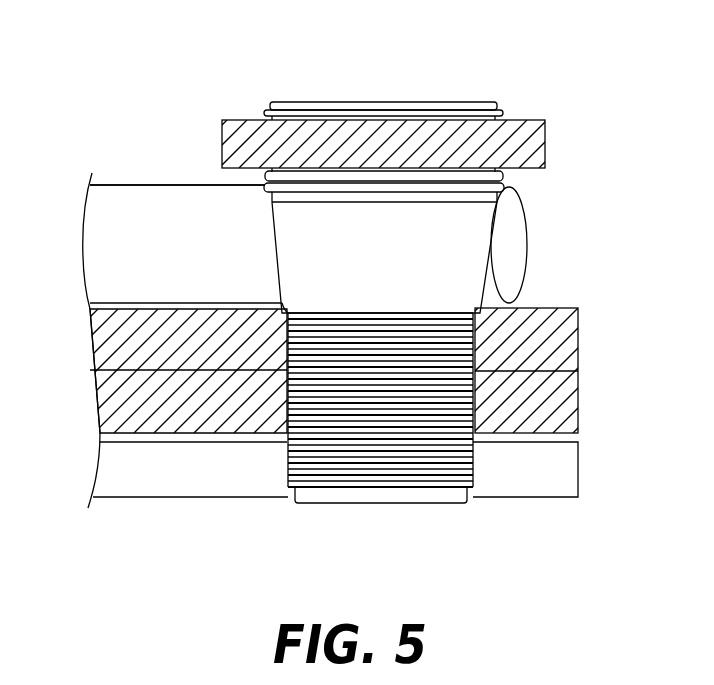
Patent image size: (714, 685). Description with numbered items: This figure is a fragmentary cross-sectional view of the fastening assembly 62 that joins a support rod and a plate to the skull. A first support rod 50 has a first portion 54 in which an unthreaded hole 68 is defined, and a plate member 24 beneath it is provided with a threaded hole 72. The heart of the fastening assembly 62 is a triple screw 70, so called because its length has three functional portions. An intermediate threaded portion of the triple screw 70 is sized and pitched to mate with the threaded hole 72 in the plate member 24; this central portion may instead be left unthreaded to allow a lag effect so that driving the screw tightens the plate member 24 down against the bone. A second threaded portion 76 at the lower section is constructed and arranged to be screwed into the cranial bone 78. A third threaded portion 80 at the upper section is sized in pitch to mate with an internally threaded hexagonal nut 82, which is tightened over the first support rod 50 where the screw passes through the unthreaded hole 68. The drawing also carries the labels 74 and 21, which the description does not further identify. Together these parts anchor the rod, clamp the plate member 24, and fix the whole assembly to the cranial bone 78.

The threaded connection 21 is at (383, 448).
The plate member 24 is at (565, 401).
The first support rod 50 is at (107, 238).
The first portion of the first support rod 54 is at (124, 194).
The fastening assembly 62 is at (582, 186).
The unthreaded hole 68 is at (490, 280).
The triple screw 70 is at (400, 270).
The threaded hole 72 is at (477, 343).
The body wall 74 is at (310, 406).
The second threaded portion 76 is at (396, 436).
The cranial bone 78 is at (560, 470).
The third threaded portion 80 is at (410, 103).
The internally threaded hexagonal nut 82 is at (247, 128).